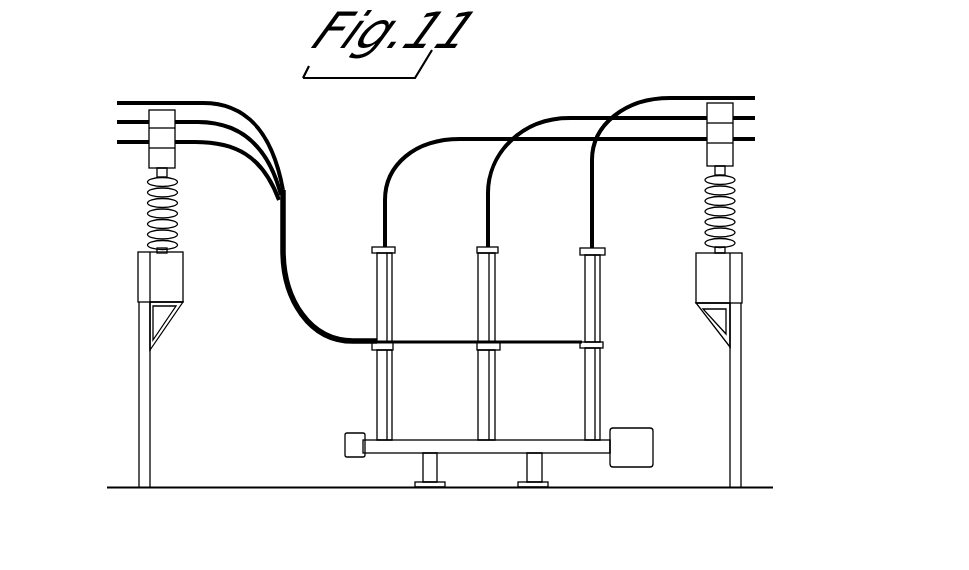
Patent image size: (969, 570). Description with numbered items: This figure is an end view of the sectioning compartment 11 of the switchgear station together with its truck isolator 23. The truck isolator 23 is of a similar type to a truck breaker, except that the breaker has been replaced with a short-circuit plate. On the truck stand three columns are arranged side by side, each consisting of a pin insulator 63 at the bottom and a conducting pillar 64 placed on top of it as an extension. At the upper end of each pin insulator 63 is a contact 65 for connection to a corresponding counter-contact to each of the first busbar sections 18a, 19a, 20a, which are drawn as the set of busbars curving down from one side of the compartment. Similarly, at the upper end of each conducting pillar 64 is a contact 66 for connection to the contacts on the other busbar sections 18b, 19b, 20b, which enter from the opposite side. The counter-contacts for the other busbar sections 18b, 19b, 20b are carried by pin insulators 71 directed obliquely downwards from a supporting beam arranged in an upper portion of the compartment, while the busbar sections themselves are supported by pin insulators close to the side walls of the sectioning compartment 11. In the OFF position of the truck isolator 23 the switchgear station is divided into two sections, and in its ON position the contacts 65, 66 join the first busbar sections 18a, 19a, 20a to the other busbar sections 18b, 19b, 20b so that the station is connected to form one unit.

The sectioning compartment 11 is at (133, 348).
The first busbar section 18a is at (117, 140).
The first busbar section 19a is at (117, 118).
The first busbar section 20a is at (117, 101).
The other busbar section 18b is at (755, 139).
The other busbar section 19b is at (755, 118).
The other busbar section 20b is at (757, 93).
The truck isolator 23 is at (390, 491).
The pin insulator 63 is at (375, 392).
The conducting pillar 64 is at (378, 293).
The contact 65 is at (372, 348).
The contact 66 is at (375, 247).
The pin insulator 71 is at (148, 207).